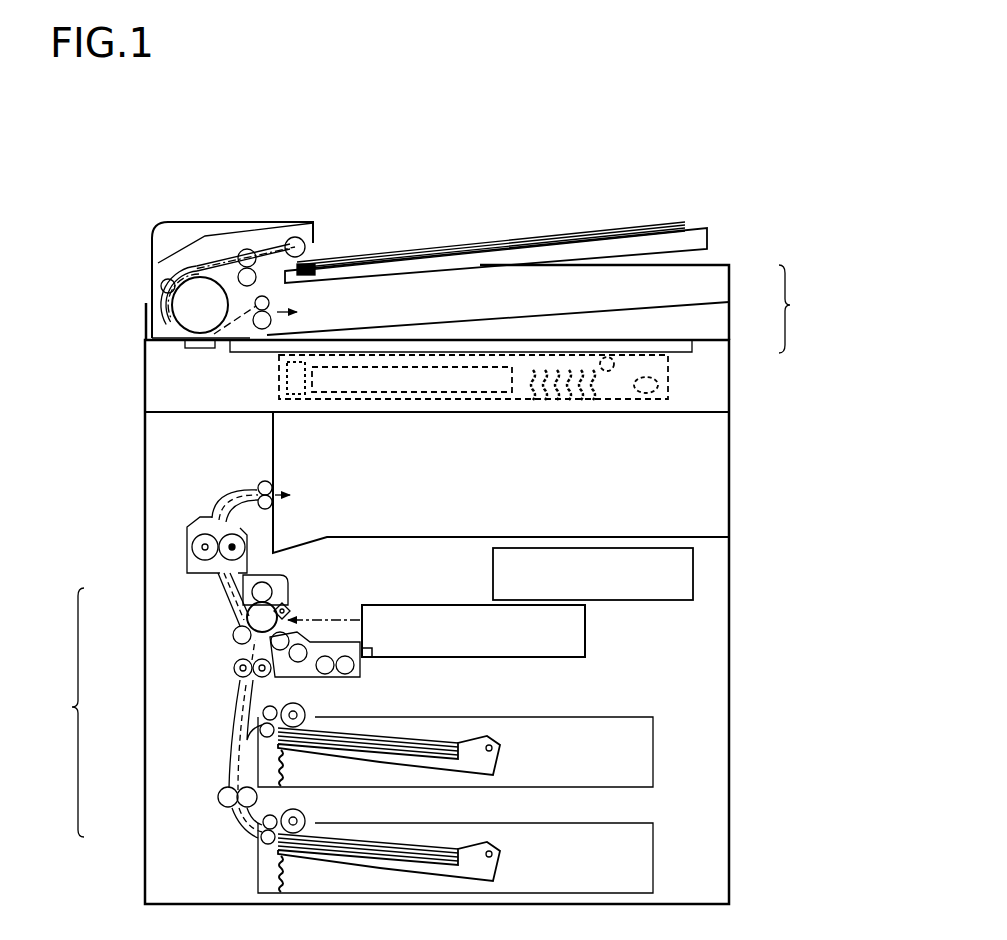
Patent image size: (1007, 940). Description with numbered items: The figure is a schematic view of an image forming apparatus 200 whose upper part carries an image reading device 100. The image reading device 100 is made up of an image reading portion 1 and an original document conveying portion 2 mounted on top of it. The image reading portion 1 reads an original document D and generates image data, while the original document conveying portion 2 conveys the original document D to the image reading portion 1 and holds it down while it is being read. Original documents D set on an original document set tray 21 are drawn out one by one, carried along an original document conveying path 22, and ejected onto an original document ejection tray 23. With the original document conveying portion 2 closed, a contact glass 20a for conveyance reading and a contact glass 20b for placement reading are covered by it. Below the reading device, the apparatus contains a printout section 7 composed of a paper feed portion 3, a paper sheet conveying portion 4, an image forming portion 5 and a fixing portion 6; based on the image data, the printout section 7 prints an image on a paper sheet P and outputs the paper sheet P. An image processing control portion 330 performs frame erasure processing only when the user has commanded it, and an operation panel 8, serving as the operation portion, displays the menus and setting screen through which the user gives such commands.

The image reading portion 1 is at (733, 357).
The original document conveying portion 2 is at (733, 289).
The paper feed portion 3 is at (258, 878).
The paper sheet conveying portion 4 is at (232, 749).
The image forming portion 5 is at (224, 628).
The fixing portion 6 is at (184, 573).
The printout section 7 is at (70, 712).
The operation panel 8 is at (670, 390).
The contact glass for conveyance reading 20a is at (198, 350).
The contact glass for placement reading 20b is at (243, 349).
The original document set tray 21 is at (701, 238).
The original document conveying path 22 is at (184, 270).
The original document ejection tray 23 is at (474, 319).
The image reading device 100 is at (807, 309).
The image forming apparatus 200 is at (128, 282).
The image processing control portion 330 is at (693, 571).
The original document D is at (560, 234).
The paper sheet P is at (436, 740).